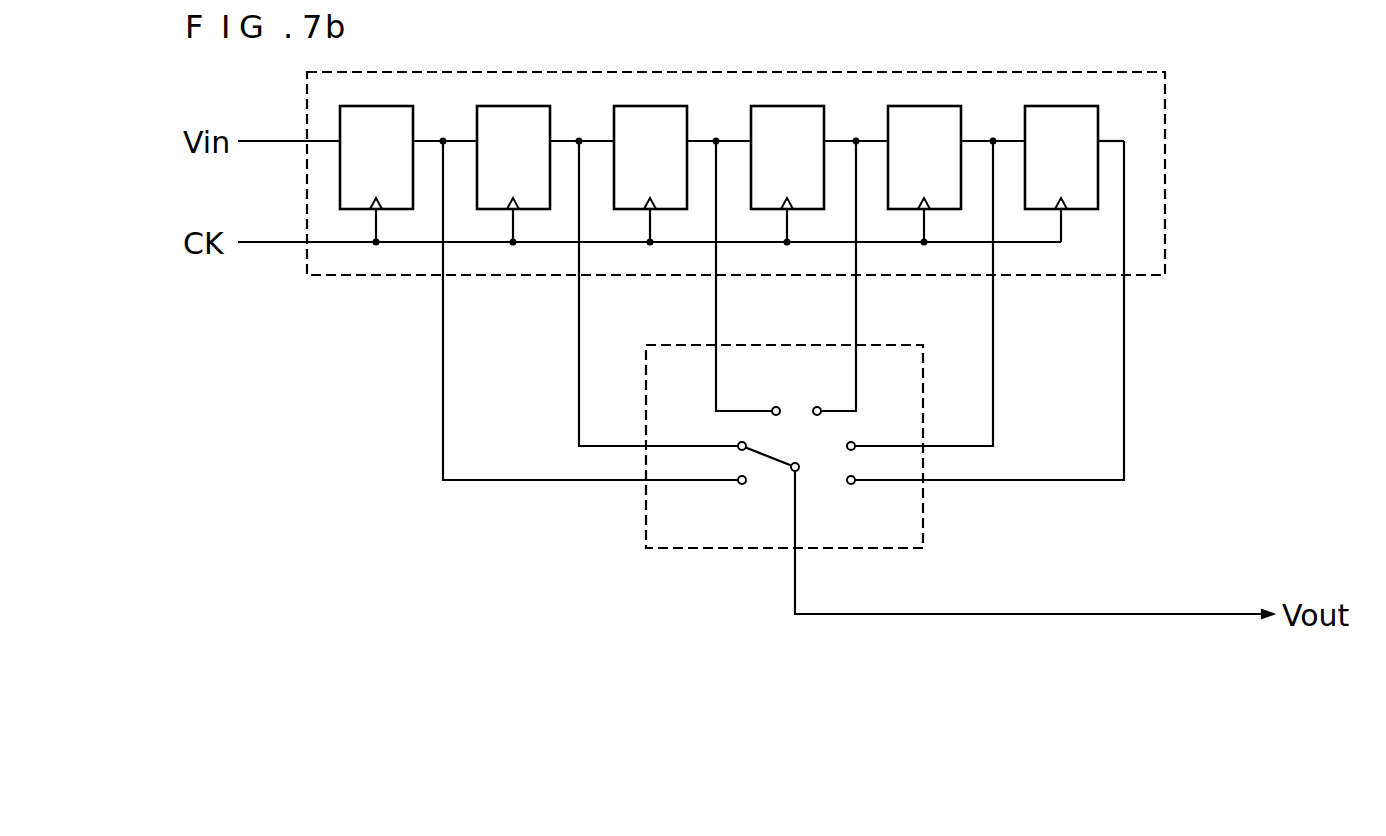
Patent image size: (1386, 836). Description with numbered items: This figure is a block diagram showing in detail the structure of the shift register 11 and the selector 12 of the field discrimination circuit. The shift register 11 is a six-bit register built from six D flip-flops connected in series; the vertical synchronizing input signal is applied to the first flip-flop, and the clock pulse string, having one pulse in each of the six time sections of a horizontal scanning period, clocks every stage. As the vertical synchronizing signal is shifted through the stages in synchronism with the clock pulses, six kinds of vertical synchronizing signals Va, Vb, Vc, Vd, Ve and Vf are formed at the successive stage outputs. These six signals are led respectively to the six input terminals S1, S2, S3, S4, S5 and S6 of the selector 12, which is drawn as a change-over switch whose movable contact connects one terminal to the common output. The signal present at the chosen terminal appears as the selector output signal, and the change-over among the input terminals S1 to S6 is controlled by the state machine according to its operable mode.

The shift register 11 is at (1124, 71).
The selector 12 is at (923, 519).
The input terminal S1 is at (730, 470).
The input terminal S2 is at (730, 435).
The input terminal S3 is at (768, 398).
The input terminal S4 is at (817, 398).
The input terminal S5 is at (851, 435).
The input terminal S6 is at (851, 470).